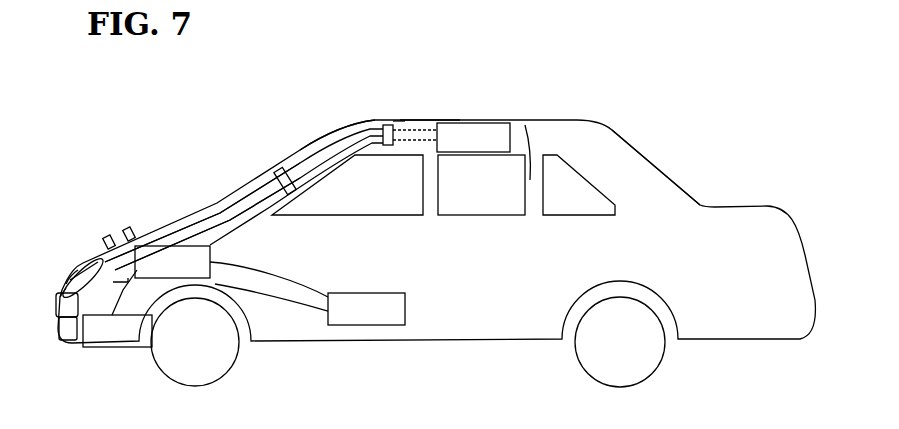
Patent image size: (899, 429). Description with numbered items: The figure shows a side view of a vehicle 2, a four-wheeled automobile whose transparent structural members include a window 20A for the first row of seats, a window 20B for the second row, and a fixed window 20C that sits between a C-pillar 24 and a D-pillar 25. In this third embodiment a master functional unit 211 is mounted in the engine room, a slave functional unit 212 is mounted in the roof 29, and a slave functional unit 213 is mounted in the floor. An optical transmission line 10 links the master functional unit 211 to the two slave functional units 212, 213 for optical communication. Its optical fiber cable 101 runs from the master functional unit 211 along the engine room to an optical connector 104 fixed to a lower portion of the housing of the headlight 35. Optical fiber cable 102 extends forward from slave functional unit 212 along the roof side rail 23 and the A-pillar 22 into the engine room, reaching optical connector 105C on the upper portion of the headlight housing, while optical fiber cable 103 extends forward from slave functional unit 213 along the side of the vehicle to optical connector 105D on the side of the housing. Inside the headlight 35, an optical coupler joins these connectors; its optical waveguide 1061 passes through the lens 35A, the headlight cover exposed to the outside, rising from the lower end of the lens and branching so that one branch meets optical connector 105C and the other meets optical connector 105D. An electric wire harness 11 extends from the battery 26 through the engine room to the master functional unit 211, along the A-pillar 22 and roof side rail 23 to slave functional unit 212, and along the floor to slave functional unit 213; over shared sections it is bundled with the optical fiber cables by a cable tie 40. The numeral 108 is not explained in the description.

The vehicle 2 is at (193, 186).
The optical transmission line 10 is at (286, 168).
The electric wire harness 11 is at (237, 197).
The A-pillar 22 is at (318, 140).
The optical fiber cable 102 is at (370, 127).
The cable tie 40 is at (390, 123).
The roof side rail 23 is at (398, 119).
The roof 29 is at (421, 119).
The slave functional unit 212 is at (474, 120).
The C-pillar 24 is at (525, 125).
The D-pillar 25 is at (637, 143).
The window 20A is at (357, 216).
The window 20B is at (478, 216).
The window 20C is at (581, 216).
The battery 26 is at (238, 247).
The optical connector 105C is at (110, 238).
The optical connector 105D is at (129, 232).
The headlight 35 is at (78, 262).
The lens 35A is at (86, 263).
The lamp wire 108 is at (70, 280).
The optical waveguide 1061 is at (62, 291).
The optical connector 104 is at (57, 302).
The optical fiber cable 101 is at (77, 330).
The master functional unit 211 is at (119, 348).
The optical fiber cable 103 is at (283, 298).
The slave functional unit 213 is at (365, 326).